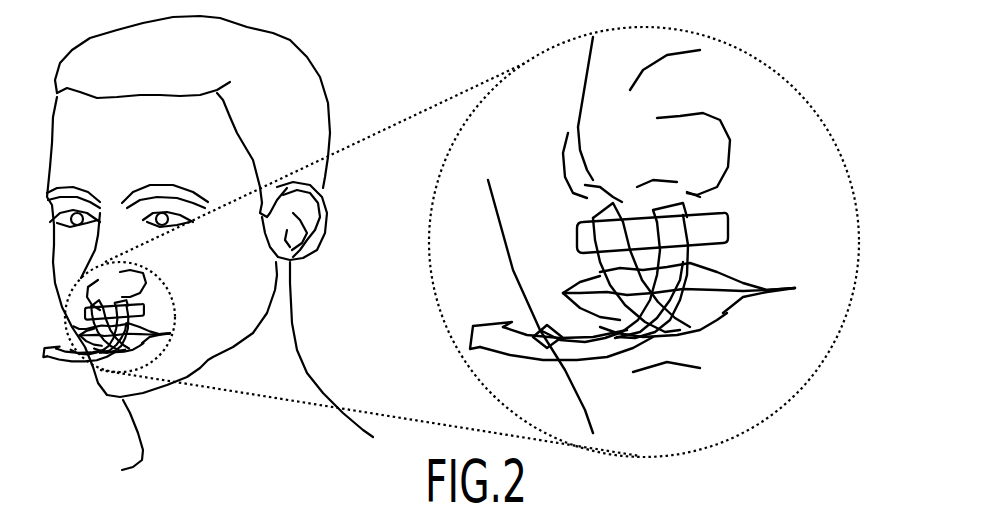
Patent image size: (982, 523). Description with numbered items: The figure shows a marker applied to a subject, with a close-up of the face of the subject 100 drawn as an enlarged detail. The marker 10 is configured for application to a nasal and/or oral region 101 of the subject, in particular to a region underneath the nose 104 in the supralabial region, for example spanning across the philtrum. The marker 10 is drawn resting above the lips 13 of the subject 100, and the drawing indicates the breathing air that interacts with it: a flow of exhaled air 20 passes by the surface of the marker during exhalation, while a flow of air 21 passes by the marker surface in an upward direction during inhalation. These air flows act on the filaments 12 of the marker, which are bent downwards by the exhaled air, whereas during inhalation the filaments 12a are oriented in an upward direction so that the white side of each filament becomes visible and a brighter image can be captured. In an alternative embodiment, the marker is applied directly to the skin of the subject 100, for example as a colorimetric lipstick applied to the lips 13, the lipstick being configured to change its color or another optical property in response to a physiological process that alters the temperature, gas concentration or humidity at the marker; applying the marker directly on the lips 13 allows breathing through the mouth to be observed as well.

The subject 100 is at (208, 235).
The nasal and/or oral region 101 is at (662, 242).
The nose 104 is at (715, 45).
The marker 10 is at (669, 209).
The flow of exhaled air 20 is at (663, 267).
The flow of air 21 is at (679, 348).
The lips 13 is at (728, 376).
The filaments 12 is at (183, 522).
The filaments 12a is at (264, 512).